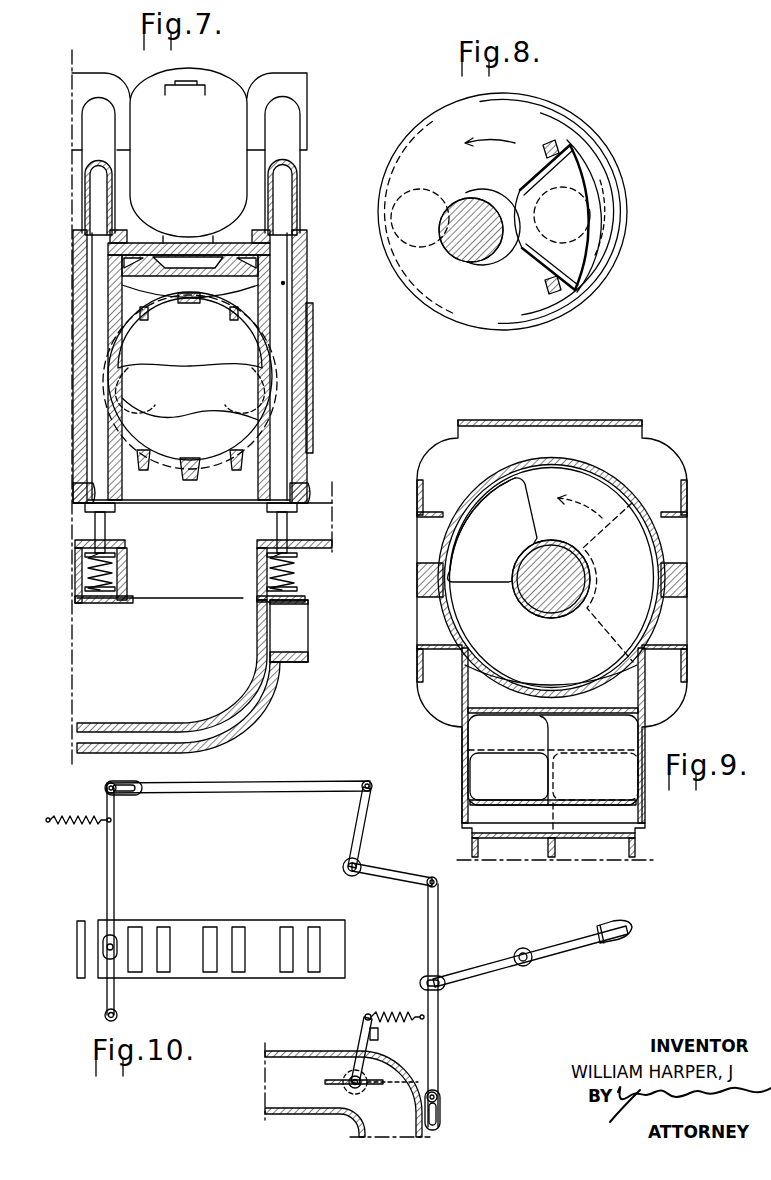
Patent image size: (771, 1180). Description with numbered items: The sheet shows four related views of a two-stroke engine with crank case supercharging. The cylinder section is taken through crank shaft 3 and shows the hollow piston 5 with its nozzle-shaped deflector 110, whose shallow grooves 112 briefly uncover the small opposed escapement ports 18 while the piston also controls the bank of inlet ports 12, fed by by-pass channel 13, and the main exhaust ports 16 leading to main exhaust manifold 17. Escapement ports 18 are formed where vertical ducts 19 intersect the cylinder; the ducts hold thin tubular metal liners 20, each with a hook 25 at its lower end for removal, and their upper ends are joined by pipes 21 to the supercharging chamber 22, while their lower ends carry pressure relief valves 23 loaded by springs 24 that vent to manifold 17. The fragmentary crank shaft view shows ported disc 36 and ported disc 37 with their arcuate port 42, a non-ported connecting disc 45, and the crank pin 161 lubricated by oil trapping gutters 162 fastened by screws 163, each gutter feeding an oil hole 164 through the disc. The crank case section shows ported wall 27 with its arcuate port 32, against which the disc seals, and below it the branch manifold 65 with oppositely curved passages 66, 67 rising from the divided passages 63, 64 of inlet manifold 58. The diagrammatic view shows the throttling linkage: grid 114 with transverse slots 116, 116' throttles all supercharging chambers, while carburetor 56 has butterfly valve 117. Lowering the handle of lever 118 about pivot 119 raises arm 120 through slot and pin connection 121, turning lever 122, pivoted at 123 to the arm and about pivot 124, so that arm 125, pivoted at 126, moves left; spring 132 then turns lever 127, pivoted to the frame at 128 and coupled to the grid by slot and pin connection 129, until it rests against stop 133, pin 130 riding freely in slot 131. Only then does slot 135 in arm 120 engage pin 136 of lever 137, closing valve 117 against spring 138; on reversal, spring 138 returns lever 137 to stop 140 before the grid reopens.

In FIG. 8, the crank shaft 3 is at (470, 253).
In FIG. 9, the crank shaft 3 is at (520, 602).
In FIG. 7, the piston 5 is at (238, 428).
In FIG. 7, the inlet ports 12 is at (208, 303).
In FIG. 7, the by-pass channel 13 is at (107, 305).
In FIG. 7, the main exhaust ports 16 is at (217, 467).
In FIG. 7, the main exhaust manifold 17 is at (230, 667).
In FIG. 7, the escapement ports 18 is at (108, 377).
In FIG. 7, the vertical ducts 19 is at (284, 283).
In FIG. 7, the tubular metal liners 20 is at (93, 252).
In FIG. 7, the pipes 21 is at (88, 128).
In FIG. 7, the supercharging chamber 22 is at (217, 92).
In FIG. 7, the pressure relief valves 23 is at (100, 527).
In FIG. 7, the springs 24 is at (95, 572).
In FIG. 7, the hook 25 is at (87, 492).
In FIG. 9, the ported wall 27 is at (582, 485).
In FIG. 9, the arcuate port 32 is at (523, 522).
In FIG. 8, the ported disc 36 is at (567, 108).
In FIG. 8, the ported disc 37 is at (463, 125).
In FIG. 9, the ported disc 37 is at (482, 518).
In FIG. 8, the arcuate port 42 is at (538, 253).
In FIG. 9, the arcuate port 42 is at (607, 628).
In FIG. 8, the non-ported connecting disc 45 is at (590, 158).
In FIG. 10, the carburetor 56 is at (283, 1053).
In FIG. 9, the inlet manifold 58 is at (640, 832).
In FIG. 9, the divided passage 63 is at (597, 852).
In FIG. 9, the divided passage 64 is at (522, 853).
In FIG. 9, the branch manifold 65 is at (473, 817).
In FIG. 9, the curved passage 66 is at (630, 737).
In FIG. 9, the curved passage 67 is at (478, 778).
In FIG. 7, the nozzle-shaped deflector 110 is at (185, 415).
In FIG. 7, the shallow grooves 112 is at (280, 367).
In FIG. 10, the grid 114 is at (187, 922).
In FIG. 10, the transverse slot 116 is at (210, 927).
In FIG. 10, the transverse slot 116' is at (309, 927).
In FIG. 10, the carburetor butterfly valve 117 is at (328, 1083).
In FIG. 10, the lever 118 is at (565, 945).
In FIG. 10, the pivot 119 is at (533, 962).
In FIG. 10, the arm 120 is at (430, 932).
In FIG. 10, the slot and pin connection 121 is at (443, 987).
In FIG. 10, the lever 122 is at (357, 818).
In FIG. 10, the pivot 123 is at (428, 883).
In FIG. 10, the pivot 124 is at (362, 860).
In FIG. 10, the arm 125 is at (253, 785).
In FIG. 10, the pivot 126 is at (373, 785).
In FIG. 10, the lever 127 is at (112, 873).
In FIG. 10, the pivot 128 is at (117, 1013).
In FIG. 10, the slot and pin connection 129 is at (114, 940).
In FIG. 10, the pin 130 is at (104, 789).
In FIG. 10, the slot 131 is at (140, 787).
In FIG. 10, the spring 132 is at (82, 823).
In FIG. 10, the stop 133 is at (82, 942).
In FIG. 10, the slot 135 is at (442, 1115).
In FIG. 10, the pin 136 is at (442, 1095).
In FIG. 10, the lever 137 is at (368, 1045).
In FIG. 10, the spring 138 is at (403, 1013).
In FIG. 10, the stop 140 is at (378, 1035).
In FIG. 8, the crank pin 161 is at (570, 212).
In FIG. 8, the oil trapping gutter 162 is at (577, 255).
In FIG. 8, the screws 163 is at (572, 278).
In FIG. 8, the oil hole 164 is at (605, 222).